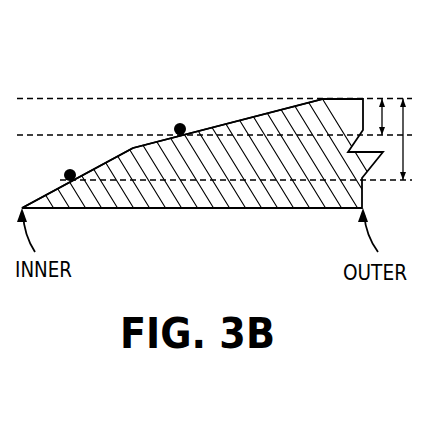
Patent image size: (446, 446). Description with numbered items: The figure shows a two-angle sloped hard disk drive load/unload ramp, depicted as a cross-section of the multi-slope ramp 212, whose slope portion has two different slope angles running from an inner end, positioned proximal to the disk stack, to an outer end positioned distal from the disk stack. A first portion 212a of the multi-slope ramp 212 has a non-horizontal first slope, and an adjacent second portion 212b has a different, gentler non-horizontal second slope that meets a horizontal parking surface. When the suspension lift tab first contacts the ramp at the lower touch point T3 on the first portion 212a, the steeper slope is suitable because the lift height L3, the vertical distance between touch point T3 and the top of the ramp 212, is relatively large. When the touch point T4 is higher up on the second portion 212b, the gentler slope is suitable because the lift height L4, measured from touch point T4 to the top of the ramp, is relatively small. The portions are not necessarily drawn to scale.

The multi-slope ramp 212 is at (48, 196).
The first portion 212a is at (57, 188).
The second portion 212b is at (237, 122).
The touch point T3 is at (69, 168).
The touch point T4 is at (175, 123).
The lift height L3 is at (412, 155).
The lift height L4 is at (384, 112).